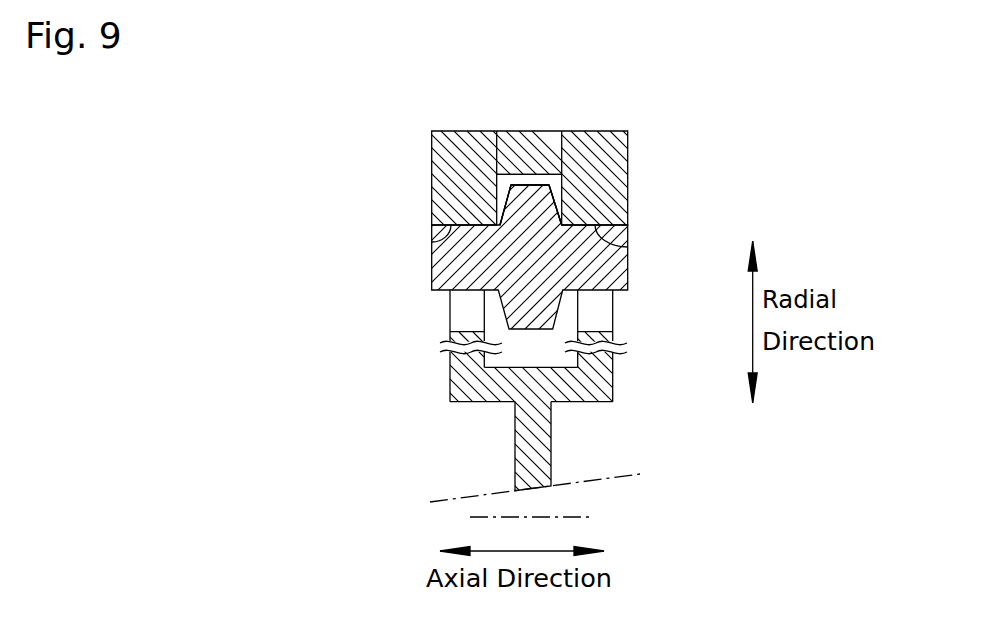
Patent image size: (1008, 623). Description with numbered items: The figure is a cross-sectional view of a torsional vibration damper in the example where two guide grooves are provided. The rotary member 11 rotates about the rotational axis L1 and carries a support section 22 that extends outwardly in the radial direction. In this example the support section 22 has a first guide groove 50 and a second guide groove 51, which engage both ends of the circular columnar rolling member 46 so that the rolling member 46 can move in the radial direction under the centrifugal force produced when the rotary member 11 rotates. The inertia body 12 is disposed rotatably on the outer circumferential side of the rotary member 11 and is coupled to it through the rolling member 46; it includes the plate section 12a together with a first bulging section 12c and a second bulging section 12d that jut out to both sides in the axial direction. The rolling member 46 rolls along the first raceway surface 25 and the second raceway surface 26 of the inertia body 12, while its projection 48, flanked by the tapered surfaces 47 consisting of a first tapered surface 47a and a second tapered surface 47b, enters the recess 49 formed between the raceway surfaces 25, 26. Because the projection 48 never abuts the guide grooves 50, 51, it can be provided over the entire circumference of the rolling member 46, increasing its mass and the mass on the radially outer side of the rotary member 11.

The rotary member 11 is at (556, 456).
The inertia body 12 is at (527, 151).
The plate section 12a is at (517, 147).
The first bulging section 12c is at (442, 150).
The second bulging section 12d is at (610, 138).
The support section 22 is at (627, 367).
The first raceway surface 25 is at (432, 243).
The second raceway surface 26 is at (628, 246).
The rolling member 46 is at (641, 262).
The protrusion 47 is at (560, 171).
The first tapered surface 47a is at (505, 205).
The second tapered surface 47b is at (557, 203).
The projection 48 is at (534, 172).
The recess 49 is at (496, 160).
The first guide groove 50 is at (467, 313).
The second guide groove 51 is at (597, 315).
The rotational axis L1 is at (582, 512).